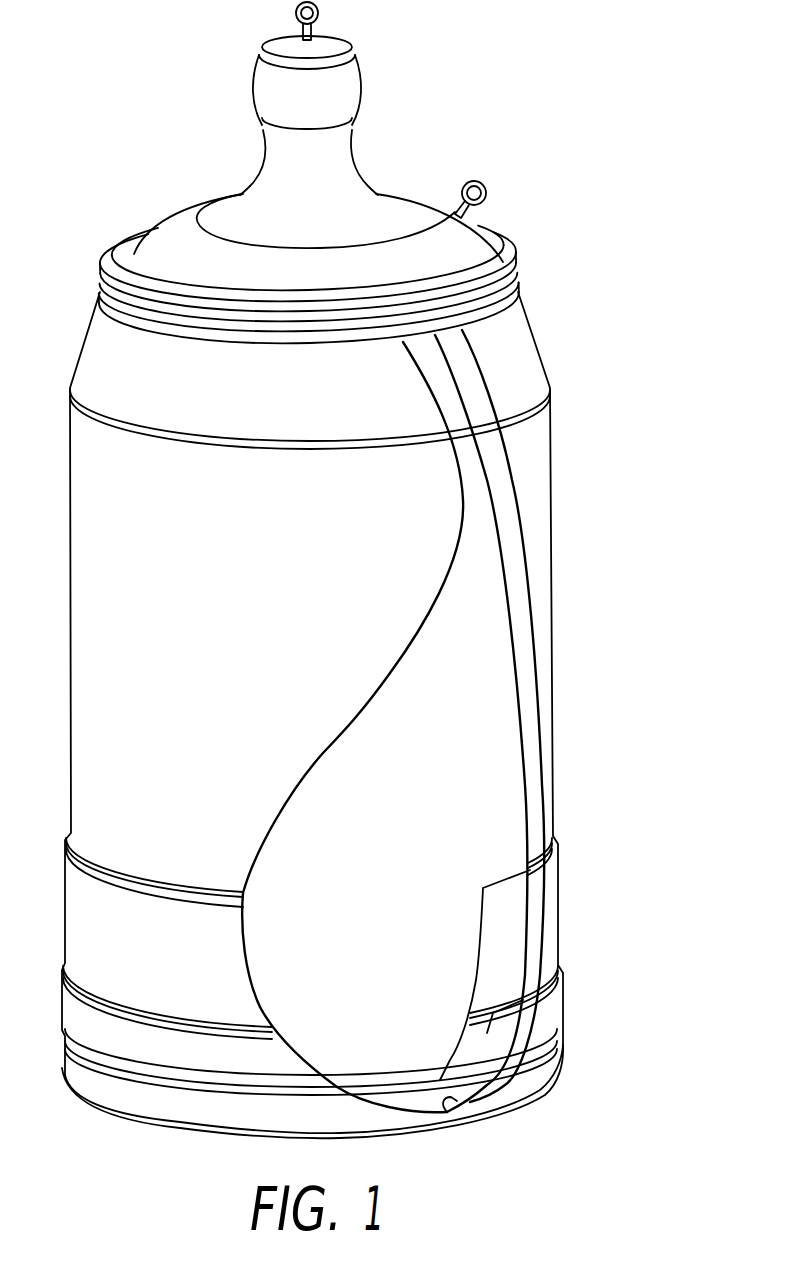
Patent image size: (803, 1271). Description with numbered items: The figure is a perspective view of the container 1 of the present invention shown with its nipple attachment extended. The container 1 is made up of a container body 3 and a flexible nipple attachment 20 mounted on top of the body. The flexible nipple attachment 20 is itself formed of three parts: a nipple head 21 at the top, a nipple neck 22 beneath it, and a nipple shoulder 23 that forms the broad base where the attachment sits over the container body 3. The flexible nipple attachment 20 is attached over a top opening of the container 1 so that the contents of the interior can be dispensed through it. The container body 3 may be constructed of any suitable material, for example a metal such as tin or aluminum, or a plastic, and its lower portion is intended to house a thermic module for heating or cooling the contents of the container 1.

The container 1 is at (593, 487).
The container body 3 is at (580, 648).
The flexible nipple attachment 20 is at (289, 132).
The nipple head 21 is at (352, 48).
The nipple neck 22 is at (258, 165).
The nipple shoulder 23 is at (158, 222).